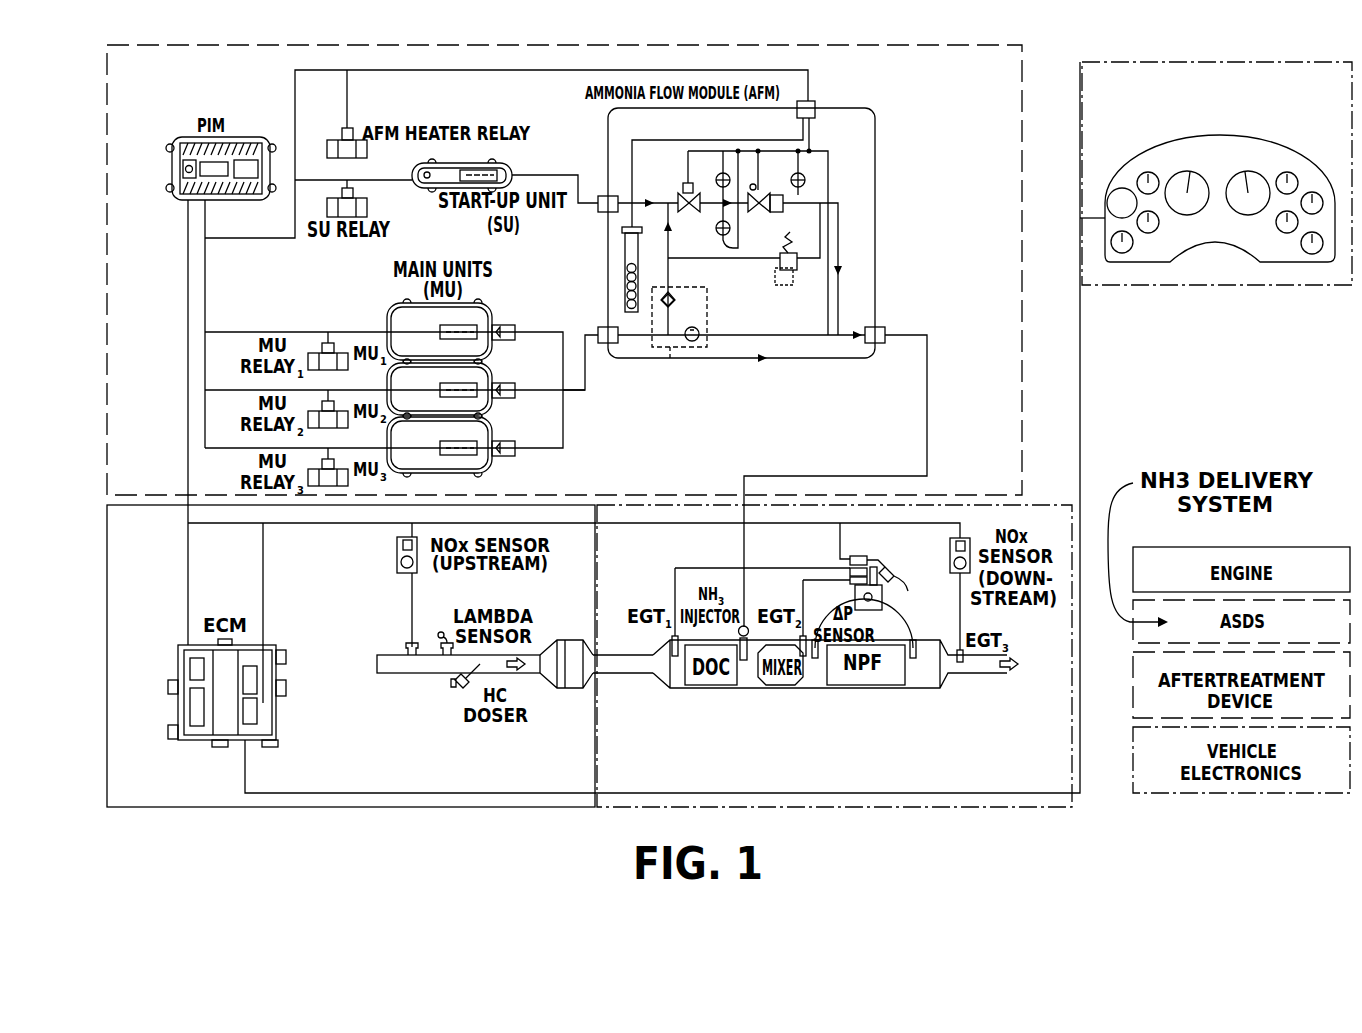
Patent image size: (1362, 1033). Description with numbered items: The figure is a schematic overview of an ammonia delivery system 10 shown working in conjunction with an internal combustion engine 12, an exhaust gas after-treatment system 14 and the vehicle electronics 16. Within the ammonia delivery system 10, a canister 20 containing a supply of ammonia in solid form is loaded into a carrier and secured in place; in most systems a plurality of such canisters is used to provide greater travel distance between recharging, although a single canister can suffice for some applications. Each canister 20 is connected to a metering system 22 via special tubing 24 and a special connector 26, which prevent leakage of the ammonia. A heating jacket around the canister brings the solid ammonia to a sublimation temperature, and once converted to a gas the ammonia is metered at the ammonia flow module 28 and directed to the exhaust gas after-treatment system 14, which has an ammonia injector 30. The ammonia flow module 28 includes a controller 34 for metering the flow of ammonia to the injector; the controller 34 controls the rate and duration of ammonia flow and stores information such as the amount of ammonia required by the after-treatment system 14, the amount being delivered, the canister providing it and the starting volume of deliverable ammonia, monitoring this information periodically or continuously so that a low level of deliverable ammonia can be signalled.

The ammonia delivery system 10 is at (1007, 93).
The internal combustion engine 12 is at (380, 777).
The exhaust gas after-treatment system 14 is at (863, 765).
The vehicle electronics 16 is at (1202, 273).
The canister 20 is at (493, 310).
The metering system 22 is at (862, 220).
The special tubing 24 is at (585, 390).
The special connector 26 is at (507, 327).
The ammonia flow module 28 is at (727, 300).
The ammonia injector 30 is at (745, 626).
The controller 34 is at (670, 358).